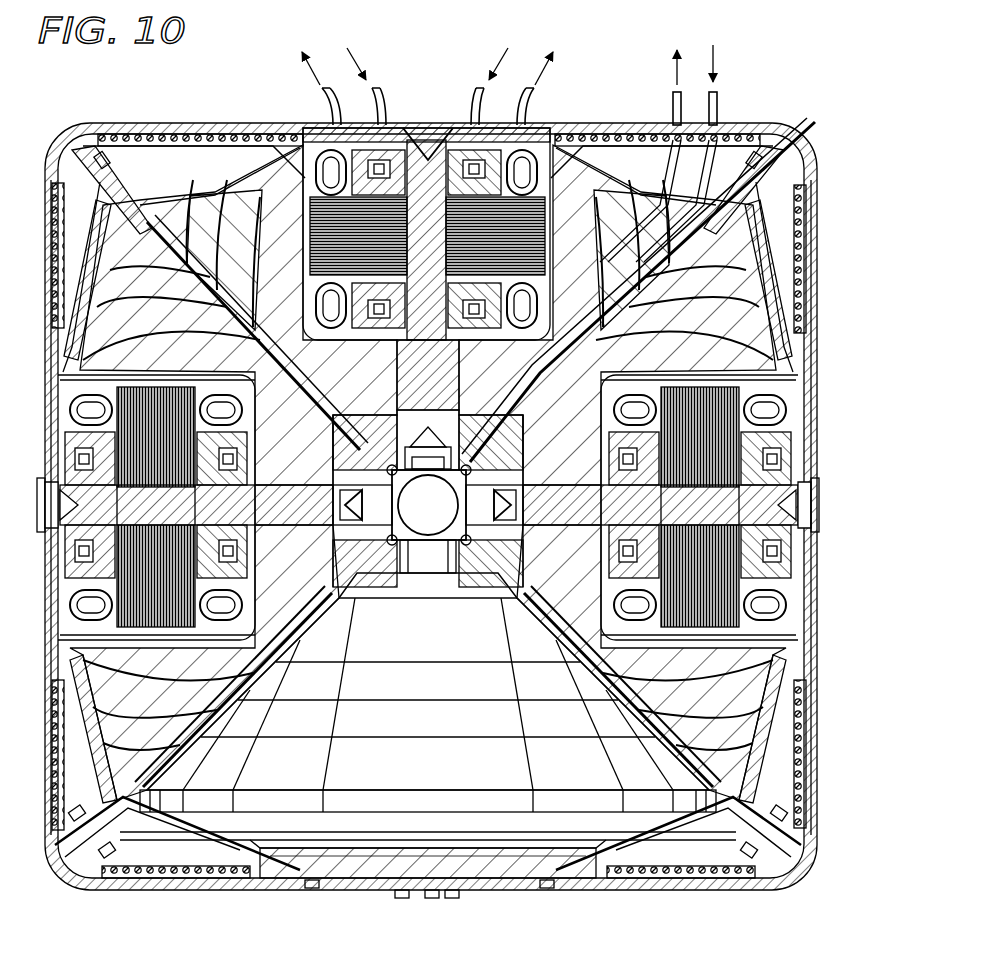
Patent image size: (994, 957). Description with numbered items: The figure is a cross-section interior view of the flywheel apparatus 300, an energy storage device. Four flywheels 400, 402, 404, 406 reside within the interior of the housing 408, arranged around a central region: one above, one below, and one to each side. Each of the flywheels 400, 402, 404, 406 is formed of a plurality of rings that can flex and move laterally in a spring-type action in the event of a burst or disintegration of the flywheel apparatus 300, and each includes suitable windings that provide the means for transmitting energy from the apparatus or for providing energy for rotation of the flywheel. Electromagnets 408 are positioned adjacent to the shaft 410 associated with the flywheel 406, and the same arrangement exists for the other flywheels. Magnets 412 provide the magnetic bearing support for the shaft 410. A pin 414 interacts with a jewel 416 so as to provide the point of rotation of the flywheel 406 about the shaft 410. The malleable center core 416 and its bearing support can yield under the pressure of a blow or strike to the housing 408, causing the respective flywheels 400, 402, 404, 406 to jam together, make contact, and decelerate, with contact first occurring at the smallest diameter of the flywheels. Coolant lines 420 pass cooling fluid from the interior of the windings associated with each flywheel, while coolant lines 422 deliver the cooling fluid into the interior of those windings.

The flywheel apparatus 300 is at (642, 40).
The flywheel 400 is at (445, 776).
The flywheel 402 is at (316, 451).
The flywheel 404 is at (510, 376).
The flywheel 406 is at (603, 418).
The housing 408 is at (175, 130).
The shaft 410 is at (817, 550).
The magnets 412 is at (632, 413).
The pin 414 is at (815, 499).
The jewel 416 is at (430, 530).
The coolant lines 420 is at (318, 92).
The coolant lines 422 is at (380, 88).